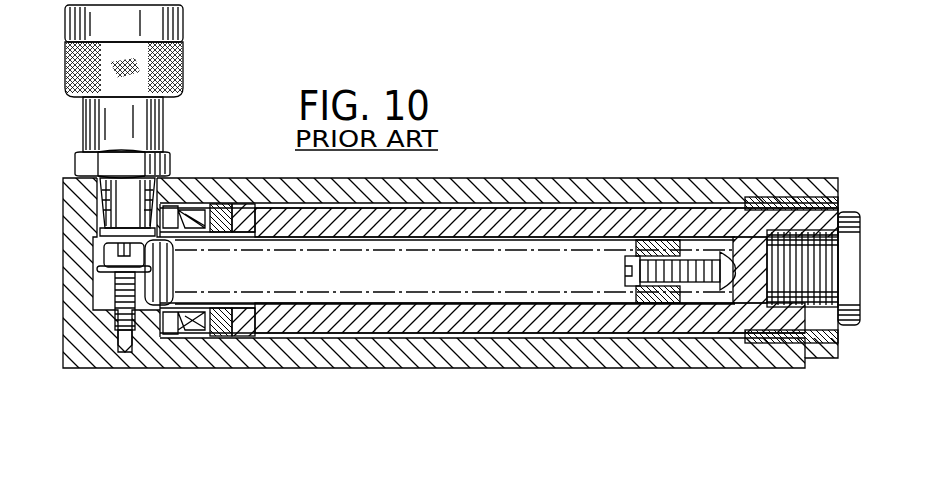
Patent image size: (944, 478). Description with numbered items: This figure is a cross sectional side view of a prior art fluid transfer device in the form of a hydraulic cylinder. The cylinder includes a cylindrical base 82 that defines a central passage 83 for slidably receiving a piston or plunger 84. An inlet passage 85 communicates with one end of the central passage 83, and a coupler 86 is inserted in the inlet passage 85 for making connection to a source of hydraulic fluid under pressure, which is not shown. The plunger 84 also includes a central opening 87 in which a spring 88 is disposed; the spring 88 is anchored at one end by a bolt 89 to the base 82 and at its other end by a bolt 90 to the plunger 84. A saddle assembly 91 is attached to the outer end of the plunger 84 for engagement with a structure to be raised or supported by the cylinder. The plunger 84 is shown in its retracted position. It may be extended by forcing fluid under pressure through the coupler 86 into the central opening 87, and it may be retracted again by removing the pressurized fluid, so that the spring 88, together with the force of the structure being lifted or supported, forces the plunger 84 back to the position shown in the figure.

The cylindrical base 82 is at (80, 325).
The central passage 83 is at (300, 205).
The plunger 84 is at (512, 218).
The inlet passage 85 is at (100, 232).
The coupler 86 is at (163, 128).
The central opening 87 is at (420, 300).
The spring 88 is at (665, 303).
The bolt 89 is at (96, 278).
The bolt 90 is at (705, 285).
The saddle assembly 91 is at (845, 212).